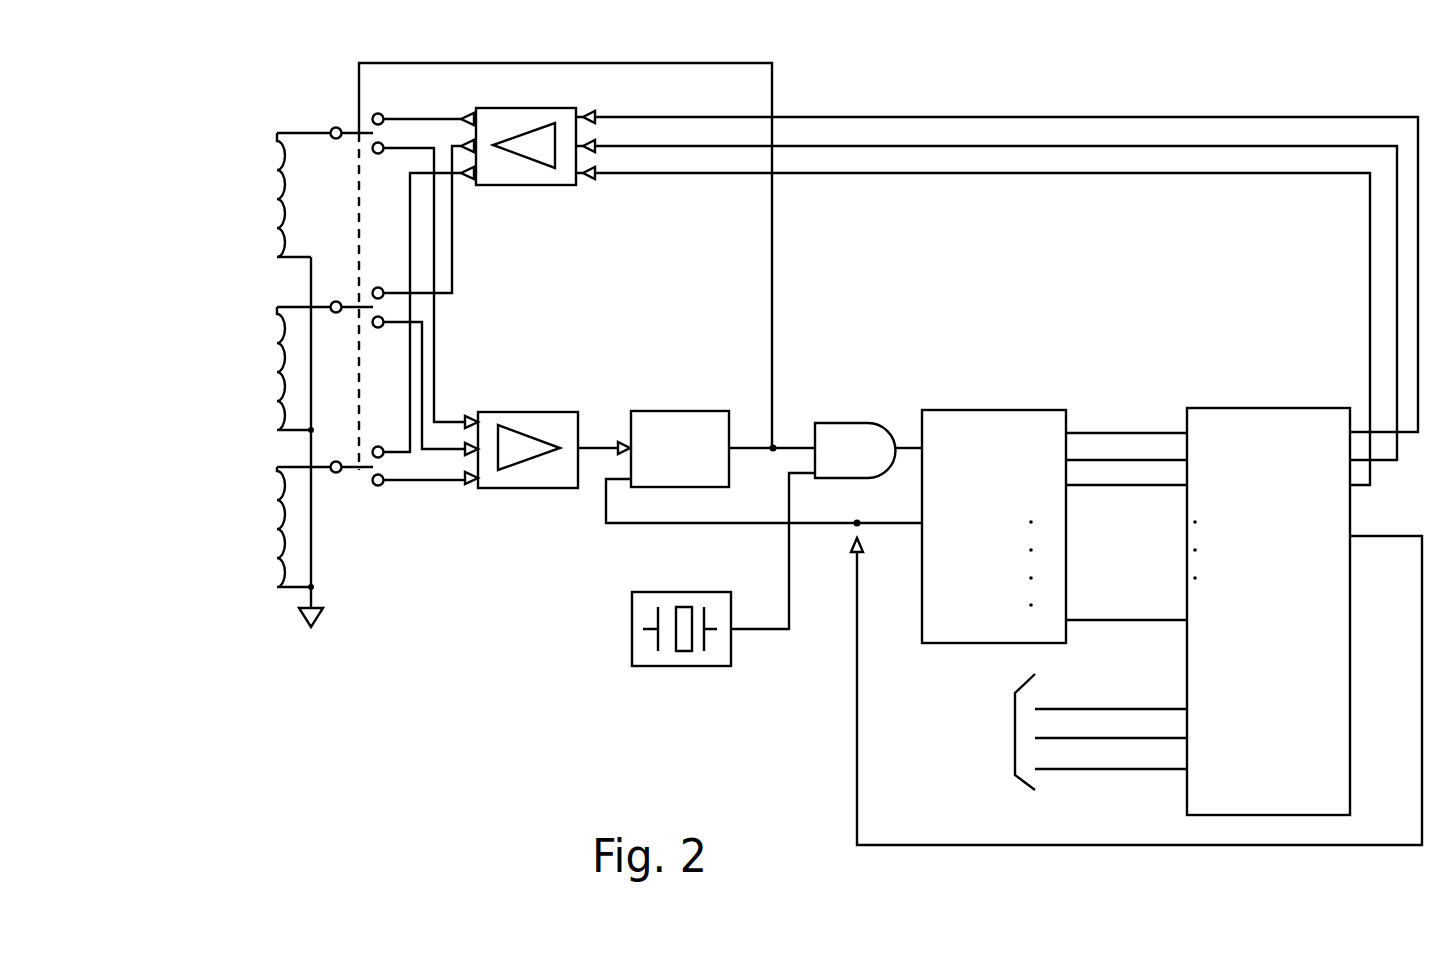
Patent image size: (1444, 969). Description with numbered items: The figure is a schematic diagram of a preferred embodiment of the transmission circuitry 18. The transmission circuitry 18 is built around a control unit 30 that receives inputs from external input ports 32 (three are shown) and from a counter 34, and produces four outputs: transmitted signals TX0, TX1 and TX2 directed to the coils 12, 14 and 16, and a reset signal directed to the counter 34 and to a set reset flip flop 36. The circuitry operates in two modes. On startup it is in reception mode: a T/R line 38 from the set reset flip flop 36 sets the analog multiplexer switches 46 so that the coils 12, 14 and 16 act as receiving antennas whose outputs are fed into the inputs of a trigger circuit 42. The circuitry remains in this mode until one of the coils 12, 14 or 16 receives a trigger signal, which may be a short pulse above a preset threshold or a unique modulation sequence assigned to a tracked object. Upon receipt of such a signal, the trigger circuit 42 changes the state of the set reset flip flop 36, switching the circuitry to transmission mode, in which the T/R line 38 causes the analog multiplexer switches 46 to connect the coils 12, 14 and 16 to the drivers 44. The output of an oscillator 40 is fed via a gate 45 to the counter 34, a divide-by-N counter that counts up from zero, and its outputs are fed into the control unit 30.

The coil 12 is at (280, 192).
The coil 14 is at (280, 360).
The coil 16 is at (280, 512).
The transmission circuitry 18 is at (1203, 93).
The control unit 30 is at (1279, 783).
The external input ports 32 is at (978, 745).
The counter 34 is at (1023, 418).
The set reset flip flop 36 is at (723, 414).
The T/R line 38 is at (503, 61).
The oscillator 40 is at (657, 662).
The trigger circuit 42 is at (557, 483).
The drivers 44 is at (563, 108).
The gate 45 is at (847, 433).
The analog multiplexer switches 46 is at (360, 475).